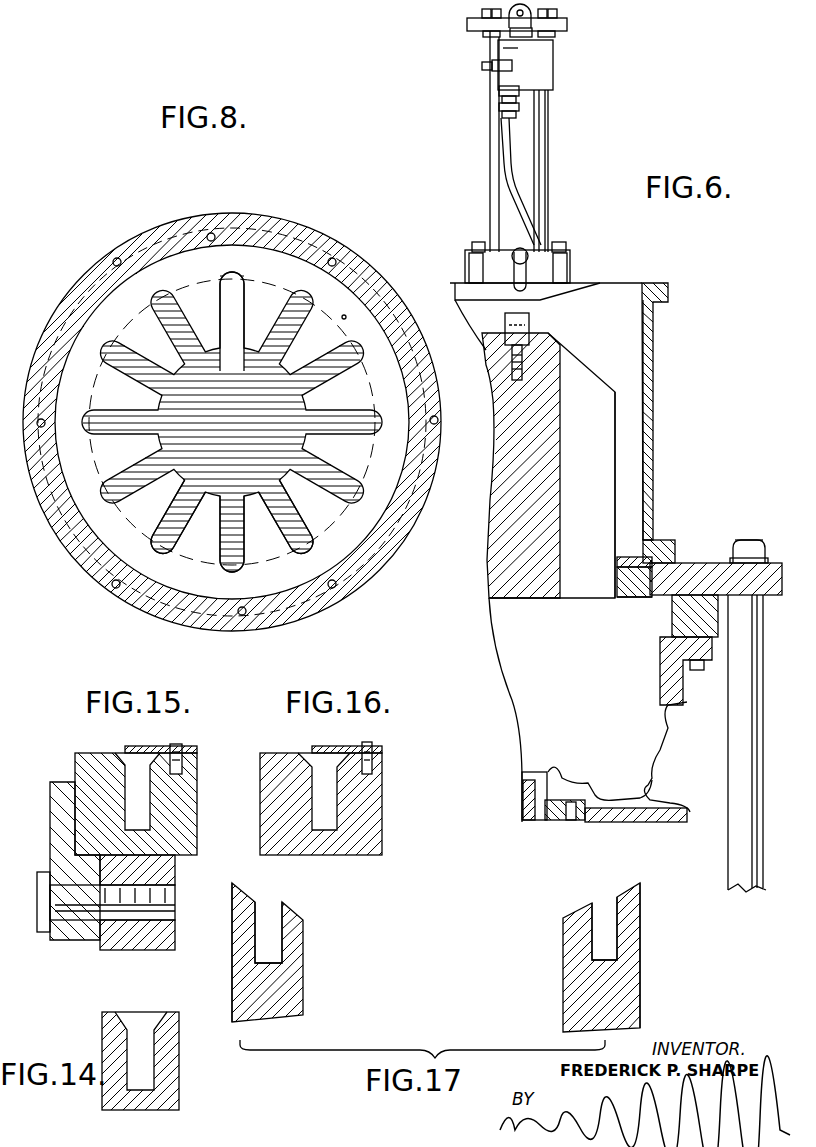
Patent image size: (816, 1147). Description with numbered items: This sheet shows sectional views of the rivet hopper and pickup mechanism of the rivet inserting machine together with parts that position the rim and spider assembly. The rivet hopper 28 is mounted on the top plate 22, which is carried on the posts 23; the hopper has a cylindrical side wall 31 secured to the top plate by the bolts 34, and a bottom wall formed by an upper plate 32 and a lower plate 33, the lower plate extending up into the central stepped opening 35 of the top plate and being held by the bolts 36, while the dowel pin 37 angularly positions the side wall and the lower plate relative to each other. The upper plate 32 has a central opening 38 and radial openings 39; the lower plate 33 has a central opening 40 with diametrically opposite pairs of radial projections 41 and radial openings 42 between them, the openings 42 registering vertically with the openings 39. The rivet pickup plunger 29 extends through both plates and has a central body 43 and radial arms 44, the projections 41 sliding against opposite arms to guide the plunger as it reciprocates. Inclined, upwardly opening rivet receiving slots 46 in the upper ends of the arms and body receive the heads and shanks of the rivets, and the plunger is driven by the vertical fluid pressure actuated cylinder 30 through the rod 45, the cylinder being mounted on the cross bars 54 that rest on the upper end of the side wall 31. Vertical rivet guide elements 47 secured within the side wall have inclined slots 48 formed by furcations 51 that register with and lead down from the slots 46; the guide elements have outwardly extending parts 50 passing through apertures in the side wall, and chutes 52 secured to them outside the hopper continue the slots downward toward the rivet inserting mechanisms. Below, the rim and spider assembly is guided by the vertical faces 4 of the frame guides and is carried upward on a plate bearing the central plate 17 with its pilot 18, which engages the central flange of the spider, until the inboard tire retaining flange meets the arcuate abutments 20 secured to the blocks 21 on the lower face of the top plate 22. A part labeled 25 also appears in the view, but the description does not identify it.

In FIG. 6, the vertical longitudinally extending faces 4 is at (492, 526).
In FIG. 6, the central plate 17 is at (579, 783).
In FIG. 6, the pilot 18 is at (559, 774).
In FIG. 6, the arcuate abutments 20 is at (660, 673).
In FIG. 6, the blocks 21 is at (673, 620).
In FIG. 6, the top plate 22 is at (703, 562).
In FIG. 6, the posts 23 is at (728, 761).
In FIG. 6, the housing 25 is at (656, 449).
In FIG. 6, the rivet hopper 28 is at (654, 386).
In FIG. 6, the rivet pickup plunger 29 is at (589, 380).
In FIG. 6, the fluid pressure actuated cylinder 30 is at (527, 184).
In FIG. 8, the cylindrical side wall 31 is at (211, 233).
In FIG. 6, the cylindrical side wall 31 is at (655, 348).
In FIG. 8, the upper plate 32 is at (290, 266).
In FIG. 6, the upper plate 32 is at (626, 556).
In FIG. 8, the lower plate 33 is at (277, 588).
In FIG. 6, the lower plate 33 is at (626, 598).
In FIG. 6, the bolts 34 is at (749, 540).
In FIG. 6, the central stepped opening 35 is at (617, 576).
In FIG. 8, the bolts 36 is at (334, 589).
In FIG. 8, the dowel pin 37 is at (243, 607).
In FIG. 8, the central opening 38 is at (291, 356).
In FIG. 8, the radial openings 39 is at (235, 267).
In FIG. 8, the central opening 40 is at (283, 545).
In FIG. 8, the radial projections 41 is at (209, 516).
In FIG. 8, the radial openings 42 is at (220, 546).
In FIG. 8, the central body 43 is at (257, 439).
In FIG. 8, the radial arms 44 is at (345, 316).
In FIG. 6, the radial arms 44 is at (584, 360).
In FIG. 14, the radial arms 44 is at (105, 1046).
In FIG. 6, the rod 45 is at (552, 308).
In FIG. 14, the rivet receiving slots 46 is at (144, 1048).
In FIG. 17, the rivet guide elements 47 is at (289, 983).
In FIG. 17, the rivet receiving slots 48 is at (264, 914).
In FIG. 15, the outwardly extending parts 50 is at (168, 871).
In FIG. 17, the furcations 51 is at (240, 936).
In FIG. 15, the chutes 52 is at (184, 798).
In FIG. 16, the chutes 52 is at (373, 819).
In FIG. 6, the cross bars 54 is at (572, 271).